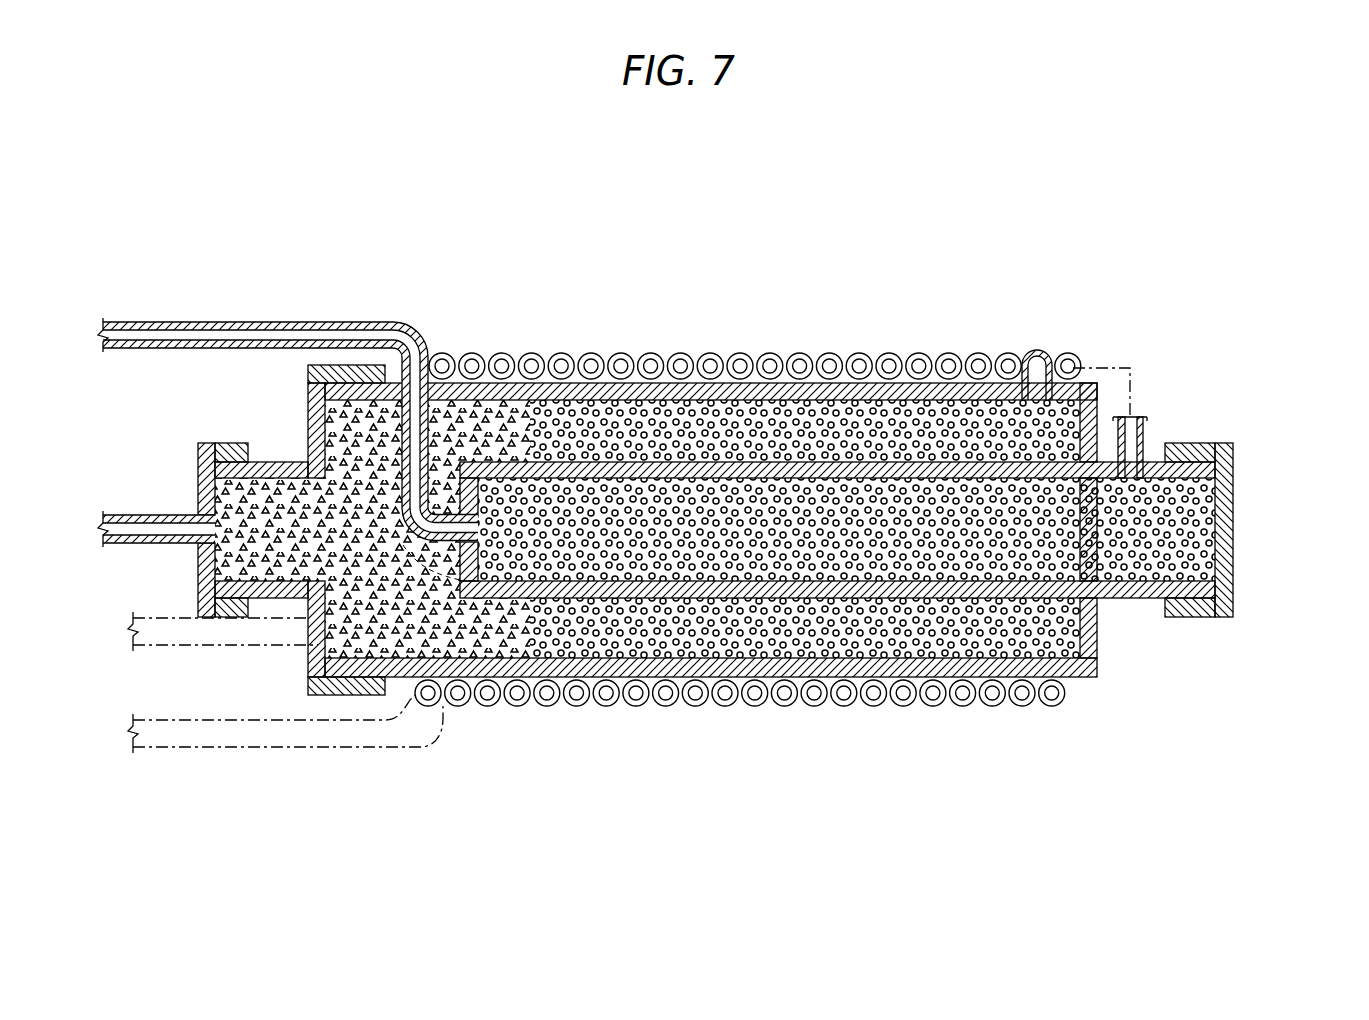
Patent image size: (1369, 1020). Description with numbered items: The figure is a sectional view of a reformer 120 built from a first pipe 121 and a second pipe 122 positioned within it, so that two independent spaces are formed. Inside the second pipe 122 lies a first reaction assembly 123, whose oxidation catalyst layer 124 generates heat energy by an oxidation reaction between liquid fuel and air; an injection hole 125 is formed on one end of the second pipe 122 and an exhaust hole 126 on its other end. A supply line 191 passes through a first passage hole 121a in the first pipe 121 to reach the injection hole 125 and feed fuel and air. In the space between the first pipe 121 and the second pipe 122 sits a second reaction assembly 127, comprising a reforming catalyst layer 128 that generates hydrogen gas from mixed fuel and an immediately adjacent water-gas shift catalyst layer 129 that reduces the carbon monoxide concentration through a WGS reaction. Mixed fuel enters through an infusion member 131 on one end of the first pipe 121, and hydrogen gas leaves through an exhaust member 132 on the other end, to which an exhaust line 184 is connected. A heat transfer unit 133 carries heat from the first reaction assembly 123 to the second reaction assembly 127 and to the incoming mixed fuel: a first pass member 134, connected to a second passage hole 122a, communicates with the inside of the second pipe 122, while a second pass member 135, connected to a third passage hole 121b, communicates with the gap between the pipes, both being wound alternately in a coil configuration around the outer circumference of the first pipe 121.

The reformer 120 is at (1283, 370).
The first pipe 121 is at (600, 660).
The first passage hole 121a is at (414, 393).
The third passage hole 121b is at (1000, 392).
The second pipe 122 is at (862, 592).
The second passage hole 122a is at (1217, 490).
The first reaction assembly 123 is at (862, 767).
The oxidation catalyst layer 124 is at (805, 562).
The injection hole 125 is at (455, 557).
The exhaust hole 126 is at (1165, 432).
The second reaction assembly 127 is at (602, 787).
The reforming catalyst layer 128 is at (555, 645).
The water-gas shift catalyst layer 129 is at (500, 643).
The infusion member 131 is at (1110, 642).
The exhaust member 132 is at (188, 478).
The heat transfer unit 133 is at (795, 267).
The first pass member 134 is at (770, 353).
The second pass member 135 is at (738, 353).
The exhaust line 184 is at (118, 546).
The supply line 191 is at (253, 322).